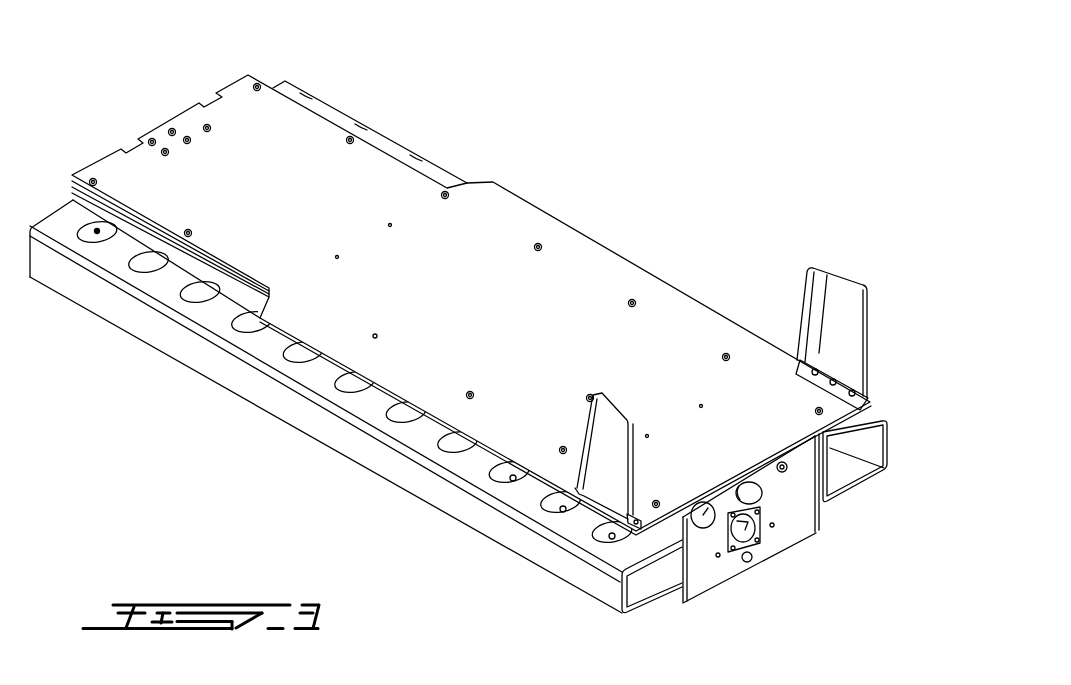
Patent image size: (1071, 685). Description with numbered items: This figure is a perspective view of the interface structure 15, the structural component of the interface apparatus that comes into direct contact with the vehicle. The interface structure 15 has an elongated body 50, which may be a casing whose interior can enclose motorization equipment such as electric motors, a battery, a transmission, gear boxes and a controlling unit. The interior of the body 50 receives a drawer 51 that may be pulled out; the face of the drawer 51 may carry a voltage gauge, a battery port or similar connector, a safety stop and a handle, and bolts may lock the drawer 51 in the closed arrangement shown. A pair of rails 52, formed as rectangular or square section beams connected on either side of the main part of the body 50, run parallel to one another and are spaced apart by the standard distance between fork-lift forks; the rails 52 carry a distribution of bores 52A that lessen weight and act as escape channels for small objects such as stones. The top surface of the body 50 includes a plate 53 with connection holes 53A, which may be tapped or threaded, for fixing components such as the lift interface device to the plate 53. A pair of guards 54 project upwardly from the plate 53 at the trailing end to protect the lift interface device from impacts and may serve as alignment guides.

The interface structure 15 is at (657, 189).
The elongated body 50 is at (455, 150).
The drawer 51 is at (790, 500).
The rails 52 is at (393, 460).
The bore 52A is at (143, 257).
The plate 53 is at (717, 310).
The connection holes 53A is at (538, 242).
The guards 54 is at (843, 302).